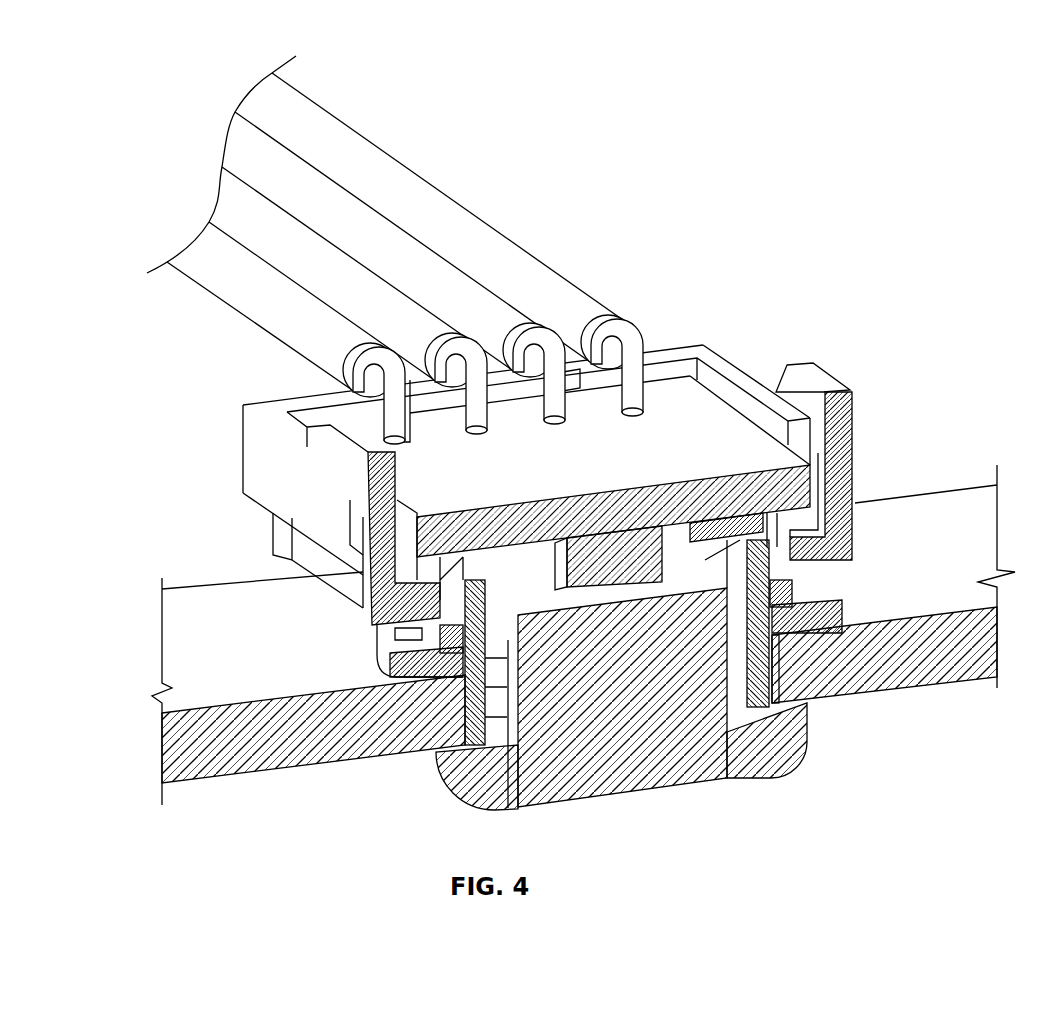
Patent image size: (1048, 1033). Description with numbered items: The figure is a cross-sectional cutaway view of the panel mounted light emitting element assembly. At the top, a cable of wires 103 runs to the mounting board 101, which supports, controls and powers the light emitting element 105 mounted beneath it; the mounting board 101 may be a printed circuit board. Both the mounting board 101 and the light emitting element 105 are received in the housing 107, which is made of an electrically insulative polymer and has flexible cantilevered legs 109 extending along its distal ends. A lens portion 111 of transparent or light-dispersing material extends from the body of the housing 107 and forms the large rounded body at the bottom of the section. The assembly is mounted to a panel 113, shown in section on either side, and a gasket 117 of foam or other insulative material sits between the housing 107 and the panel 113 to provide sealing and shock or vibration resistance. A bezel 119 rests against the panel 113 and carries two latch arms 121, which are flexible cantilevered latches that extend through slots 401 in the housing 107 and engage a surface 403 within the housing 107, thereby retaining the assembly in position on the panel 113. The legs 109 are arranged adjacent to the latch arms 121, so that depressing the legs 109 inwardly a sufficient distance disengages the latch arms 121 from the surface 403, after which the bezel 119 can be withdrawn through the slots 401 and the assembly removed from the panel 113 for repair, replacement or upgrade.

The mounting board 101 is at (663, 402).
The wires 103 is at (262, 315).
The light emitting element 105 is at (600, 574).
The housing 107 is at (258, 454).
The flexible cantilevered legs 109 is at (850, 437).
The lens portion 111 is at (670, 767).
The panel 113 is at (945, 510).
The gasket 117 is at (783, 622).
The bezel 119 is at (808, 732).
The latch arms 121 is at (763, 623).
The slots 401 is at (425, 752).
The surface 403 is at (450, 585).